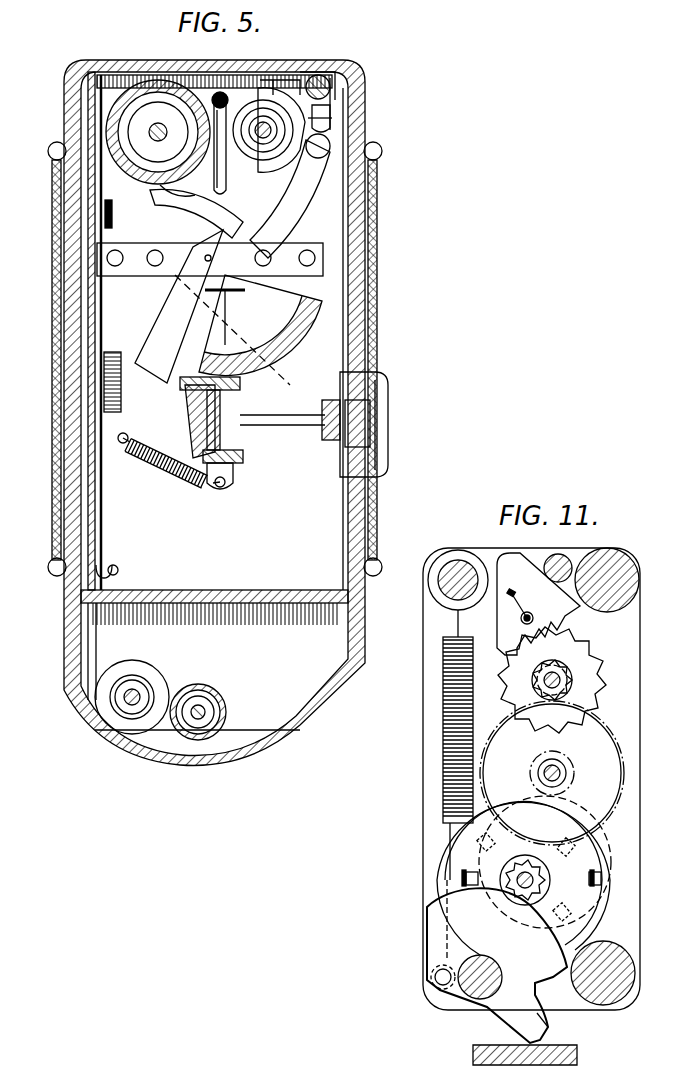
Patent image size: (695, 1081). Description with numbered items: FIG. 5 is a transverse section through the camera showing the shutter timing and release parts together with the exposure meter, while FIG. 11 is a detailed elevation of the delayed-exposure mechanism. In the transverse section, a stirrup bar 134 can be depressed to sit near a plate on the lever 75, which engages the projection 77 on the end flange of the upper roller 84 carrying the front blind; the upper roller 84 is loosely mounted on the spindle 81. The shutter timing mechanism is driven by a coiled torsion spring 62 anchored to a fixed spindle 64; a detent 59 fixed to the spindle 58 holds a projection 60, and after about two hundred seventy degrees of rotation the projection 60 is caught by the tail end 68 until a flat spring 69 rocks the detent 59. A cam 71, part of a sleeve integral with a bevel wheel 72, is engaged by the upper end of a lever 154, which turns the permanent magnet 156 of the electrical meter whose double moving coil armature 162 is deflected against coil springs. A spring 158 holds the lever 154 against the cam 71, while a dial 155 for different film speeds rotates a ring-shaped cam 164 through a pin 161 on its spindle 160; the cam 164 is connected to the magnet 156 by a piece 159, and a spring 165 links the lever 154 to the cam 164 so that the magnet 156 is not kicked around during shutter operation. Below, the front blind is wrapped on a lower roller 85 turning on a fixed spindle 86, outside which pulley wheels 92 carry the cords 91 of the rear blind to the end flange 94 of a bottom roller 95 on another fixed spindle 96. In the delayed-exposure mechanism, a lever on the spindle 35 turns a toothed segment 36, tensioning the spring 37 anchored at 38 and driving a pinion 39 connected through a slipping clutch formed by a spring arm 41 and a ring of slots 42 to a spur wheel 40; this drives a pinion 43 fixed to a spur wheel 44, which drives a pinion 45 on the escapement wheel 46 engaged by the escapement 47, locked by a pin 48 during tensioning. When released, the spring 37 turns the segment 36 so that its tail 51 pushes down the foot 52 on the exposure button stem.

In FIG. 5, the stirrup bar 134 is at (218, 92).
In FIG. 5, the fixed spindle 64 is at (262, 100).
In FIG. 5, the flat spring 69 is at (300, 78).
In FIG. 5, the detent 59 is at (320, 75).
In FIG. 5, the spindle 58 is at (336, 72).
In FIG. 5, the projection 60 is at (336, 92).
In FIG. 5, the tail end 68 is at (320, 116).
In FIG. 5, the bevel wheel 72 is at (320, 134).
In FIG. 5, the coiled torsion spring 62 is at (330, 152).
In FIG. 5, the upper roller 84 is at (108, 124).
In FIG. 5, the spindle 81 is at (150, 143).
In FIG. 5, the projection 77 is at (105, 211).
In FIG. 5, the lever 75 is at (160, 198).
In FIG. 5, the cam 71 is at (255, 200).
In FIG. 5, the lever 154 is at (290, 213).
In FIG. 5, the double moving coil armature 162 is at (210, 257).
In FIG. 5, the permanent magnet 156 is at (310, 330).
In FIG. 5, the spring 158 is at (130, 351).
In FIG. 5, the ring-shaped cam 164 is at (190, 411).
In FIG. 5, the spindle 160 is at (285, 426).
In FIG. 5, the piece 159 is at (225, 426).
In FIG. 5, the pin 161 is at (236, 471).
In FIG. 5, the spring 165 is at (150, 468).
In FIG. 5, the dial 155 is at (386, 426).
In FIG. 5, the cords 91 is at (72, 656).
In FIG. 5, the pulley wheels 92 is at (97, 701).
In FIG. 5, the fixed spindle 86 is at (125, 711).
In FIG. 5, the lower roller 85 is at (110, 741).
In FIG. 5, the bottom roller 95 is at (203, 700).
In FIG. 5, the fixed spindle 96 is at (224, 708).
In FIG. 5, the end flange 94 is at (215, 741).
In FIG. 11, the escapement 47 is at (521, 566).
In FIG. 11, the pin 48 is at (572, 551).
In FIG. 11, the escapement wheel 46 is at (580, 653).
In FIG. 11, the pinion 45 is at (570, 703).
In FIG. 11, the spur wheel 44 is at (616, 742).
In FIG. 11, the pinion 43 is at (574, 777).
In FIG. 11, the spring arm 41 is at (612, 816).
In FIG. 11, the spur wheel 40 is at (615, 858).
In FIG. 11, the slots 42 is at (462, 883).
In FIG. 11, the pinion 39 is at (533, 898).
In FIG. 11, the spring 37 is at (443, 723).
In FIG. 11, the toothed segment 36 is at (432, 928).
In FIG. 11, the spindle 35 is at (488, 962).
In FIG. 11, the anchorage 38 is at (435, 988).
In FIG. 11, the tail 51 is at (542, 1028).
In FIG. 11, the foot 52 is at (577, 1050).